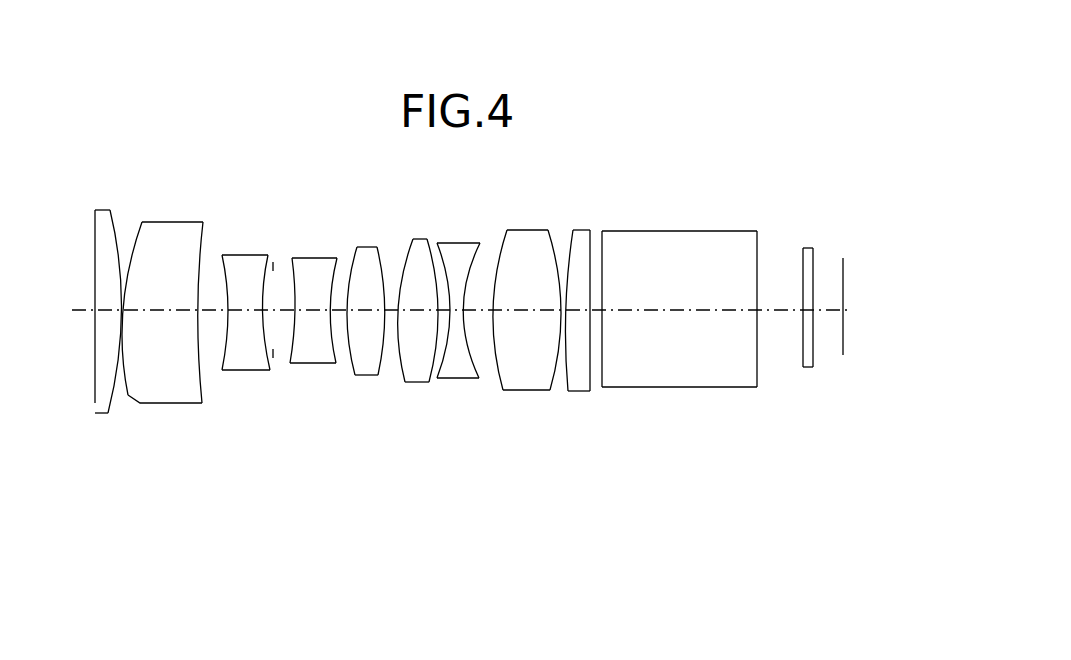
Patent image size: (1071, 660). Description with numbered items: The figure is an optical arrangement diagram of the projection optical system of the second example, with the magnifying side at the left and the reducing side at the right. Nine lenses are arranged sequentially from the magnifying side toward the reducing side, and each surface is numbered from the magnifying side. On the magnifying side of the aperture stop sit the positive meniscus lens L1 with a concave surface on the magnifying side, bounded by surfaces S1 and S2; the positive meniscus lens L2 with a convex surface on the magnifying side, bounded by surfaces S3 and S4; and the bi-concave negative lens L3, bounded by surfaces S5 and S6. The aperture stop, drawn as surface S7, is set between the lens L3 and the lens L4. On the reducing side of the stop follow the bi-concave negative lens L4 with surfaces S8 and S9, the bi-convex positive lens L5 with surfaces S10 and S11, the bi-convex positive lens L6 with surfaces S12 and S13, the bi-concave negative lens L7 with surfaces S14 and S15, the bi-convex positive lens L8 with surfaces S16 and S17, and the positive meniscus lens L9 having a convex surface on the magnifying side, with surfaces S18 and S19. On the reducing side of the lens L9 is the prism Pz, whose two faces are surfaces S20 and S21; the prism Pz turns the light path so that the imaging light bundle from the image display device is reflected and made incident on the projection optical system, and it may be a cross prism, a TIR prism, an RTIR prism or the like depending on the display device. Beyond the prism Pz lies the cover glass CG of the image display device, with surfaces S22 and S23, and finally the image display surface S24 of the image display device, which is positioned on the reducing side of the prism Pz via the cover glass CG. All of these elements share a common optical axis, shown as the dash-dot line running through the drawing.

The positive meniscus lens L1 is at (94, 317).
The positive meniscus lens L2 is at (162, 312).
The bi-concave negative lens L3 is at (238, 303).
The bi-concave negative lens L4 is at (305, 299).
The bi-convex positive lens L5 is at (352, 319).
The bi-convex positive lens L6 is at (411, 333).
The bi-concave negative lens L7 is at (472, 349).
The bi-convex positive lens L8 is at (552, 351).
The positive meniscus lens L9 is at (620, 328).
The prism Pz is at (683, 314).
The cover glass CG is at (816, 312).
The first surface S1 is at (95, 403).
The second surface S2 is at (108, 413).
The third surface S3 is at (128, 395).
The fourth surface S4 is at (202, 403).
The fifth surface S5 is at (222, 370).
The sixth surface S6 is at (270, 370).
The aperture stop surface S7 is at (271, 293).
The eighth surface S8 is at (290, 363).
The ninth surface S9 is at (336, 363).
The tenth surface S10 is at (355, 375).
The eleventh surface S11 is at (378, 375).
The twelfth surface S12 is at (405, 382).
The thirteenth surface S13 is at (429, 382).
The fourteenth surface S14 is at (437, 378).
The fifteenth surface S15 is at (479, 378).
The sixteenth surface S16 is at (503, 390).
The seventeenth surface S17 is at (550, 390).
The eighteenth surface S18 is at (568, 391).
The nineteenth surface S19 is at (590, 391).
The twentieth surface S20 is at (602, 387).
The twenty-first surface S21 is at (757, 387).
The twenty-second surface S22 is at (803, 367).
The twenty-third surface S23 is at (813, 367).
The image display surface S24 is at (843, 355).